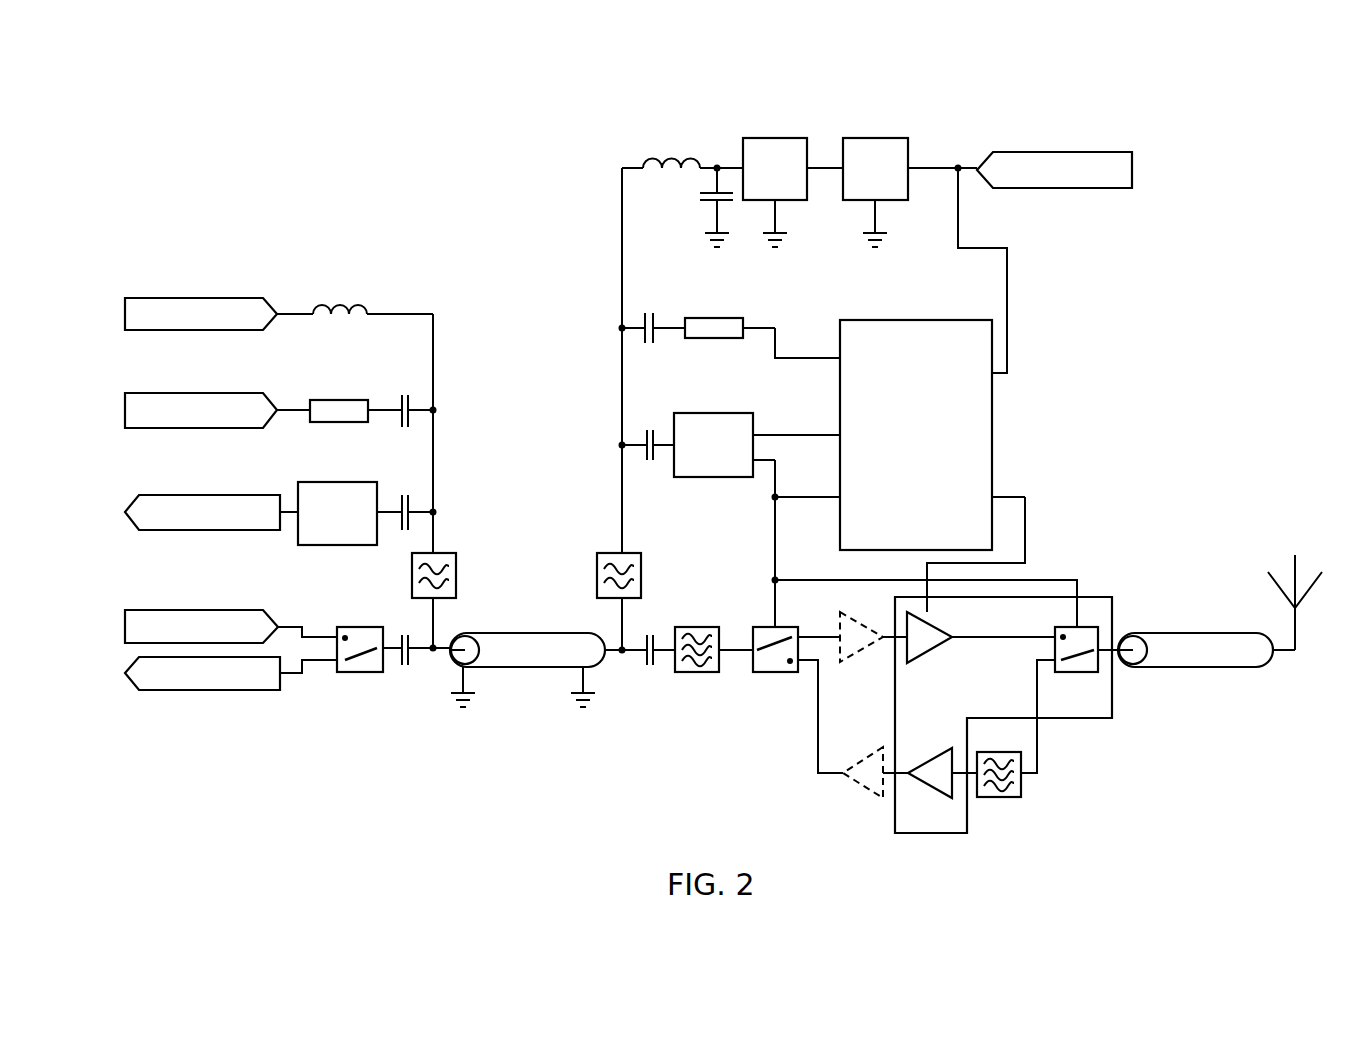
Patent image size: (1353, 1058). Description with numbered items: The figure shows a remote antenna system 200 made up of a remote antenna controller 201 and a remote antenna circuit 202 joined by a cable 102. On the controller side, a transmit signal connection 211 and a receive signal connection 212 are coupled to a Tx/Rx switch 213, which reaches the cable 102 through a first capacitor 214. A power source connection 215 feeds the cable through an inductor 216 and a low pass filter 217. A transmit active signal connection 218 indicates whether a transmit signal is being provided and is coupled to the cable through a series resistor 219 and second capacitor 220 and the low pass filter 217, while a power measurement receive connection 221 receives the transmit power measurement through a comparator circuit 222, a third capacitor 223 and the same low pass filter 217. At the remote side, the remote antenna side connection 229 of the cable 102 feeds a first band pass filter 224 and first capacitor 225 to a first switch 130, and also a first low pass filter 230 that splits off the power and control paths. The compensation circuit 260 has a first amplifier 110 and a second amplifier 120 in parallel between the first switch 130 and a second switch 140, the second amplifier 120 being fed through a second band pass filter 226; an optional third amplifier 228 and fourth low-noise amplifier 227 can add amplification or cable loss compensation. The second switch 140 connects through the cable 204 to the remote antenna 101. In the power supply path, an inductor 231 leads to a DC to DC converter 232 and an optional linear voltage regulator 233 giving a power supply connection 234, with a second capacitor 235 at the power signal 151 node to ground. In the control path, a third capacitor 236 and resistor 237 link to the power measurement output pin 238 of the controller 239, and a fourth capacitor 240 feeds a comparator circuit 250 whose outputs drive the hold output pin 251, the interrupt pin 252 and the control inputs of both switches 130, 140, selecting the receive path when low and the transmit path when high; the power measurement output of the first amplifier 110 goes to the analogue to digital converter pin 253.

The remote antenna 101 is at (1296, 568).
The cable 102 is at (538, 667).
The first amplifier 110 is at (945, 647).
The second amplifier 120 is at (929, 752).
The first switch 130 is at (774, 672).
The second switch 140 is at (1087, 623).
The power signal 151 is at (721, 164).
The remote antenna system 200 is at (498, 800).
The remote antenna controller 201 is at (317, 749).
The remote antenna circuit 202 is at (1126, 320).
The cable 204 is at (1197, 667).
The transmit signal connection 211 is at (212, 609).
The receive signal connection 212 is at (204, 692).
The Tx/Rx switch 213 is at (362, 674).
The first capacitor 214 is at (406, 667).
The power source connection 215 is at (212, 298).
The inductor 216 is at (345, 297).
The low pass filter 217 is at (457, 574).
The transmit active signal connection 218 is at (212, 393).
The resistor 219 is at (335, 400).
The second capacitor 220 is at (405, 395).
The power measurement receive connection 221 is at (210, 495).
The comparator circuit 222 is at (337, 482).
The third capacitor 223 is at (405, 483).
The first band pass filter 224 is at (699, 672).
The first capacitor 225 is at (647, 665).
The second band pass filter 226 is at (1000, 798).
The fourth low-noise amplifier 227 is at (868, 752).
The third amplifier 228 is at (840, 621).
The remote antenna side connection 229 is at (622, 649).
The first low pass filter 230 is at (642, 572).
The inductor 231 is at (670, 149).
The DC to DC converter 232 is at (775, 138).
The linear voltage regulator 233 is at (875, 138).
The power supply connection 234 is at (1055, 152).
The second capacitor 235 is at (700, 199).
The third capacitor 236 is at (652, 313).
The resistor 237 is at (718, 318).
The power measurement output pin 238 is at (838, 357).
The controller 239 is at (994, 436).
The fourth capacitor 240 is at (652, 428).
The comparator circuit 250 is at (714, 413).
The hold output pin 251 is at (838, 432).
The interrupt pin 252 is at (838, 495).
The analogue to digital converter pin 253 is at (994, 495).
The compensation circuit 260 is at (1075, 718).